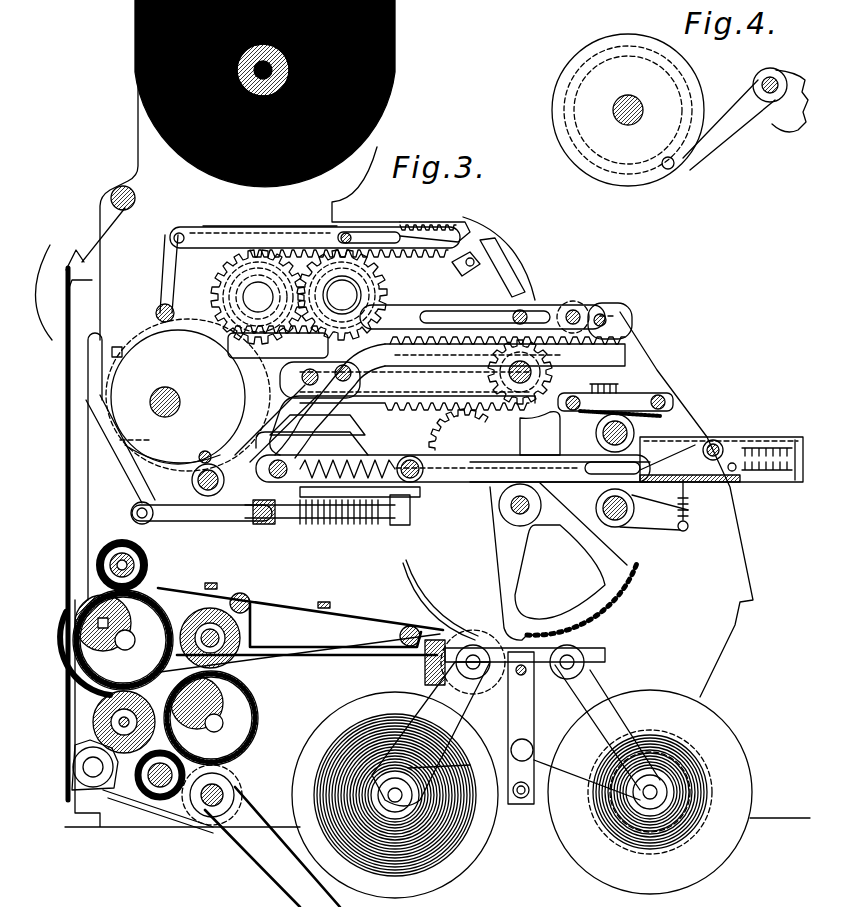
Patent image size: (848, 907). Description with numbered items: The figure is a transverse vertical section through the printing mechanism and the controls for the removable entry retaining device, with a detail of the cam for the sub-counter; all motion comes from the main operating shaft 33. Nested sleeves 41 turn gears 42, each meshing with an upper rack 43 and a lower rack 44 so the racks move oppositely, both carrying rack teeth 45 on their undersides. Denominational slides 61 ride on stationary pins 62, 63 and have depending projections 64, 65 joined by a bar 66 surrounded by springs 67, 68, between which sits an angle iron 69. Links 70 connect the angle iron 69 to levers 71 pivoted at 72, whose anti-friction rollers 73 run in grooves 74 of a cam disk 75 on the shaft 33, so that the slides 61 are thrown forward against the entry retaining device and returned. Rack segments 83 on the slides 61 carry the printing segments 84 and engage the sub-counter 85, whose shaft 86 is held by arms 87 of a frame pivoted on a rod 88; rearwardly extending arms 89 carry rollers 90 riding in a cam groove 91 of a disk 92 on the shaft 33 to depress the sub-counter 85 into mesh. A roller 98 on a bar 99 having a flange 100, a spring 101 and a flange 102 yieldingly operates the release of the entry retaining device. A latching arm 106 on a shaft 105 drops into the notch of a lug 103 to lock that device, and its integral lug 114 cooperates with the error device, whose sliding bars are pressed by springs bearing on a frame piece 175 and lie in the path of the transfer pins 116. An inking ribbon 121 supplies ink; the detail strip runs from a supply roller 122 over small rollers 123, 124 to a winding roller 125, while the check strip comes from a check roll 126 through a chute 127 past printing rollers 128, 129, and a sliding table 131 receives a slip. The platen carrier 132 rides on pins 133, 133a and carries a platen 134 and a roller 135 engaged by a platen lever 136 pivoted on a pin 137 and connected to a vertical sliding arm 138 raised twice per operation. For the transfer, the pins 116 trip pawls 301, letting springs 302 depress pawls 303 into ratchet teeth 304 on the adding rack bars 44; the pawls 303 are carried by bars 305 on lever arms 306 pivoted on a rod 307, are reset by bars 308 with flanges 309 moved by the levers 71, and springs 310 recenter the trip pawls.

In FIG. 4, the main operating shaft 33 is at (640, 86).
In FIG. 4, the rearwardly extending arms 89 is at (726, 128).
In FIG. 3, the rearwardly extending arms 89 is at (276, 423).
In FIG. 4, the anti-friction rollers 90 is at (668, 172).
In FIG. 4, the cam groove 91 is at (680, 74).
In FIG. 4, the disk 92 is at (628, 110).
In FIG. 3, the nested sleeves 41 is at (225, 300).
In FIG. 3, the gears 42 is at (386, 300).
In FIG. 3, the rack 43 is at (490, 240).
In FIG. 3, the rack 44 is at (330, 401).
In FIG. 3, the rack teeth 45 is at (632, 342).
In FIG. 3, the denominational slides 61 is at (575, 500).
In FIG. 3, the stationary pin 62 is at (300, 450).
In FIG. 3, the stationary pin 63 is at (418, 480).
In FIG. 3, the depending projection 64 is at (270, 520).
In FIG. 3, the depending projection 65 is at (400, 525).
In FIG. 3, the bar 66 is at (282, 525).
In FIG. 3, the spring 67 is at (408, 562).
In FIG. 3, the spring 68 is at (262, 526).
In FIG. 3, the sliding frame or angle iron 69 is at (240, 618).
In FIG. 3, the links 70 is at (208, 520).
In FIG. 3, the levers 71 is at (126, 488).
In FIG. 3, the pivot 72 is at (160, 290).
In FIG. 3, the anti-friction rollers 73 is at (117, 345).
In FIG. 3, the grooves 74 is at (172, 453).
In FIG. 3, the cam disk 75 is at (150, 404).
In FIG. 3, the rack segments 83 is at (539, 445).
In FIG. 3, the printing segments 84 is at (563, 561).
In FIG. 3, the sub-counter 85 is at (650, 372).
In FIG. 3, the shaft 86 is at (488, 378).
In FIG. 3, the arms 87 is at (394, 383).
In FIG. 3, the rod 88 is at (278, 344).
In FIG. 3, the anti-friction roller 98 is at (300, 378).
In FIG. 3, the bar 99 is at (318, 390).
In FIG. 3, the flange 100 is at (382, 452).
In FIG. 3, the spring 101 is at (360, 493).
In FIG. 3, the flange 102 is at (317, 432).
In FIG. 3, the lug 103 is at (691, 451).
In FIG. 3, the shaft 105 is at (603, 430).
In FIG. 3, the latching arm 106 is at (700, 434).
In FIG. 3, the lug 114 is at (680, 420).
In FIG. 3, the transfer pins 116 is at (615, 389).
In FIG. 3, the inking ribbon 121 is at (640, 612).
In FIG. 3, the supply roller 122 is at (338, 712).
In FIG. 3, the small roller 123 is at (425, 684).
In FIG. 3, the small roller 124 is at (590, 666).
In FIG. 3, the winding roller 125 is at (740, 748).
In FIG. 3, the check roll 126 is at (148, 203).
In FIG. 3, the chute 127 is at (48, 510).
In FIG. 3, the printing roller 128 is at (123, 616).
In FIG. 3, the printing roller 129 is at (211, 718).
In FIG. 3, the sliding table 131 is at (300, 627).
In FIG. 3, the sliding platen carrier 132 is at (536, 760).
In FIG. 3, the pin 133 is at (508, 708).
In FIG. 3, the pin 133a is at (439, 763).
In FIG. 3, the platen 134 is at (450, 670).
In FIG. 3, the roller 135 is at (560, 850).
In FIG. 3, the platen lever 136 is at (258, 858).
In FIG. 3, the pin 137 is at (206, 812).
In FIG. 3, the vertical sliding arm 138 is at (78, 752).
In FIG. 3, the frame piece 175 is at (557, 895).
In FIG. 3, the trip pawls 301 is at (470, 300).
In FIG. 3, the springs 302 is at (466, 222).
In FIG. 3, the pawls 303 is at (480, 264).
In FIG. 3, the ratchet teeth 304 is at (430, 322).
In FIG. 3, the bars 305 is at (188, 395).
In FIG. 3, the lever arms 306 is at (165, 439).
In FIG. 3, the rod 307 is at (186, 483).
In FIG. 3, the bars 308 is at (315, 242).
In FIG. 3, the flanges 309 is at (525, 267).
In FIG. 3, the springs 310 is at (620, 304).